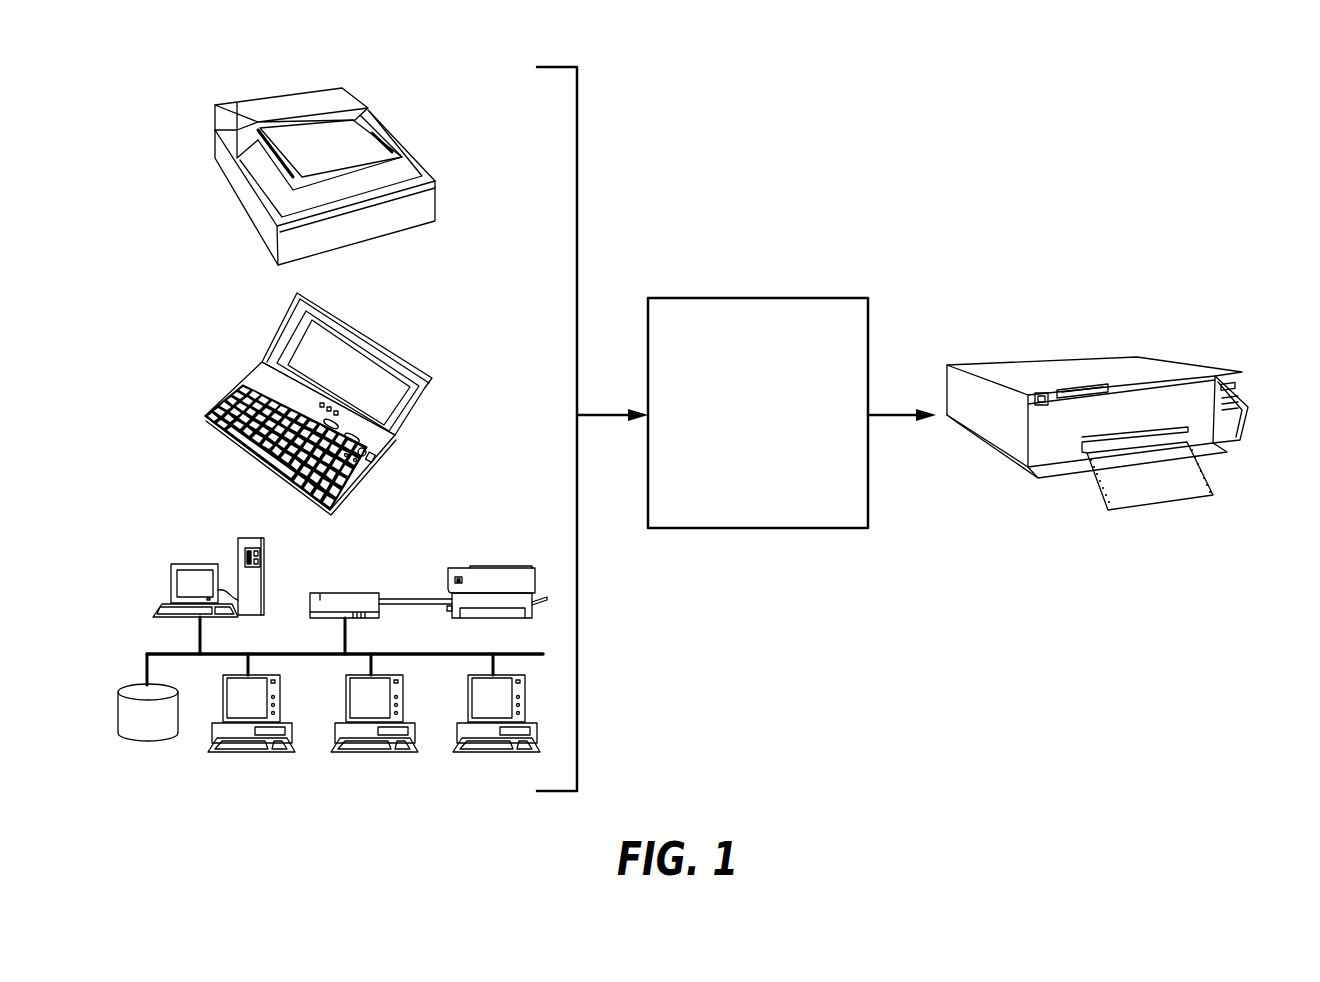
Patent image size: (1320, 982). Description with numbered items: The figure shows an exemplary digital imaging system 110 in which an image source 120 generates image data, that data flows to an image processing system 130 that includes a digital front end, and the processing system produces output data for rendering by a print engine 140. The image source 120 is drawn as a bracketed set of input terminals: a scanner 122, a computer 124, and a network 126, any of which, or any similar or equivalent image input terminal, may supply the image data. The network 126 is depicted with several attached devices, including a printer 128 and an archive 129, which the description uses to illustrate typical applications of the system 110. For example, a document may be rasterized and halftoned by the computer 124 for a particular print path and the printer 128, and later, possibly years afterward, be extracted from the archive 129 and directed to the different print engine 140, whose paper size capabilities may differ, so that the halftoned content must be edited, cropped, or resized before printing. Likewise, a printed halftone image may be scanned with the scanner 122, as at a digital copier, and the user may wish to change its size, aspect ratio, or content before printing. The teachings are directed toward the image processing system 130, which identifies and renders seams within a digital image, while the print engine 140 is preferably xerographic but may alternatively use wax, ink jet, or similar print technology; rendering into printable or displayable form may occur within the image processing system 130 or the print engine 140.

The digital imaging system 110 is at (819, 140).
The image source 120 is at (422, 415).
The scanner 122 is at (397, 237).
The computer 124 is at (395, 345).
The network 126 is at (332, 668).
The printer 128 is at (492, 566).
The archive 129 is at (145, 745).
The image processing system 130 is at (750, 530).
The print engine 140 is at (1065, 478).